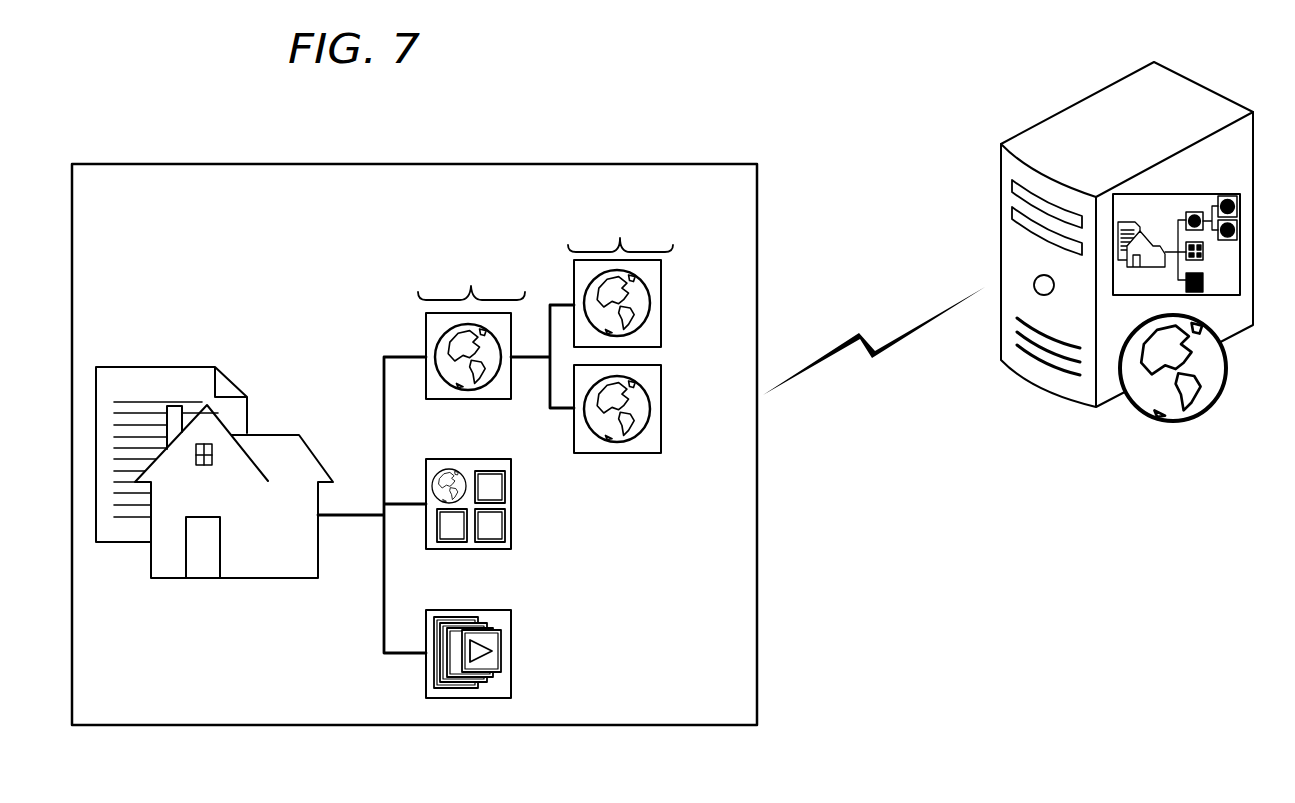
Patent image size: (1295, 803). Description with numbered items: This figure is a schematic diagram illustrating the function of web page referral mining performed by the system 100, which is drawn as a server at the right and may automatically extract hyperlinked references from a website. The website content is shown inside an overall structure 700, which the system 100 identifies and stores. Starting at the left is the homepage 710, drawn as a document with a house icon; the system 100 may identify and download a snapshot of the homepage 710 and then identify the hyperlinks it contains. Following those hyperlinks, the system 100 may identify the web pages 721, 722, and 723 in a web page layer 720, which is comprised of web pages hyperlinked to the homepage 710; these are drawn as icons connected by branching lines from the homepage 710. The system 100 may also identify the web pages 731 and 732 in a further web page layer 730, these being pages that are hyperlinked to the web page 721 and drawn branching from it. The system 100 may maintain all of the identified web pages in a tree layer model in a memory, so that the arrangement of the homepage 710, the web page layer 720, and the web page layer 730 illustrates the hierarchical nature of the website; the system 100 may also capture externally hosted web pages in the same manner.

The system 100 is at (1068, 125).
The content structure 700 is at (536, 163).
The homepage 710 is at (172, 378).
The web page layer 720 is at (470, 285).
The web page 721 is at (465, 384).
The web page 722 is at (511, 504).
The web page 723 is at (511, 653).
The web page layer 730 is at (618, 237).
The web page 731 is at (661, 303).
The web page 732 is at (661, 409).